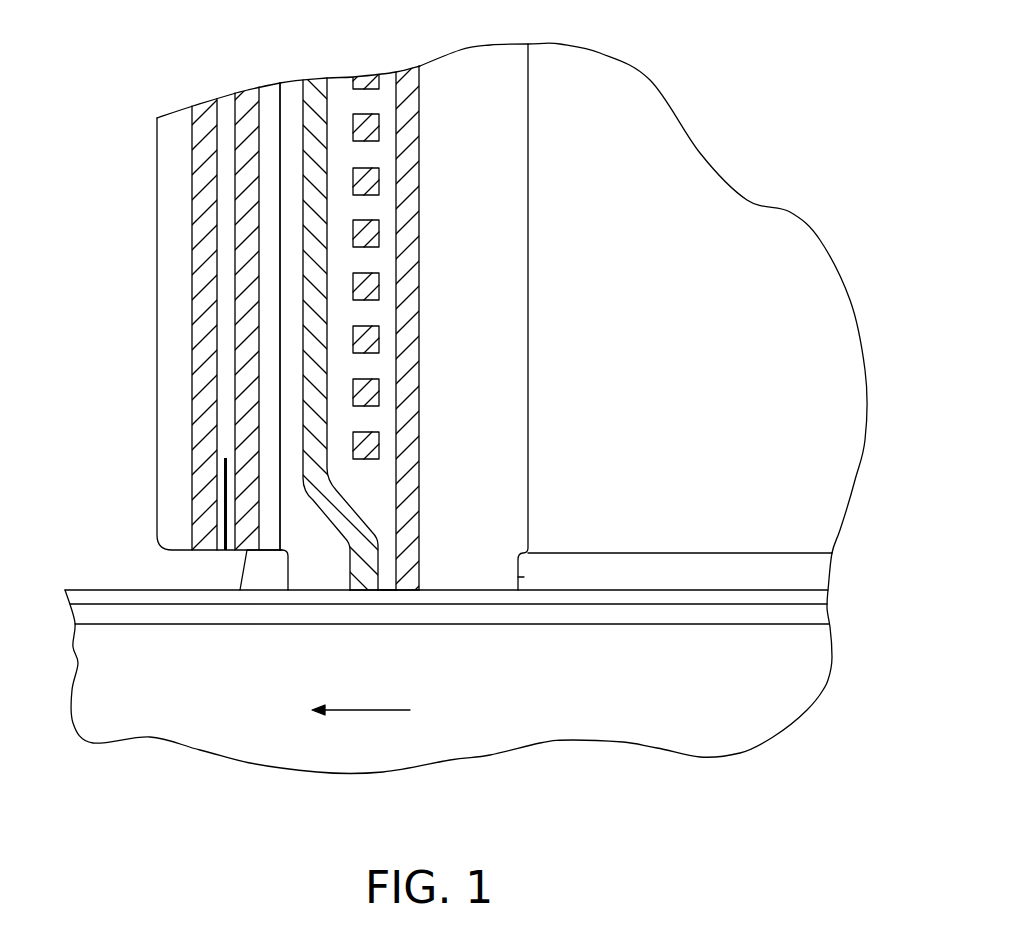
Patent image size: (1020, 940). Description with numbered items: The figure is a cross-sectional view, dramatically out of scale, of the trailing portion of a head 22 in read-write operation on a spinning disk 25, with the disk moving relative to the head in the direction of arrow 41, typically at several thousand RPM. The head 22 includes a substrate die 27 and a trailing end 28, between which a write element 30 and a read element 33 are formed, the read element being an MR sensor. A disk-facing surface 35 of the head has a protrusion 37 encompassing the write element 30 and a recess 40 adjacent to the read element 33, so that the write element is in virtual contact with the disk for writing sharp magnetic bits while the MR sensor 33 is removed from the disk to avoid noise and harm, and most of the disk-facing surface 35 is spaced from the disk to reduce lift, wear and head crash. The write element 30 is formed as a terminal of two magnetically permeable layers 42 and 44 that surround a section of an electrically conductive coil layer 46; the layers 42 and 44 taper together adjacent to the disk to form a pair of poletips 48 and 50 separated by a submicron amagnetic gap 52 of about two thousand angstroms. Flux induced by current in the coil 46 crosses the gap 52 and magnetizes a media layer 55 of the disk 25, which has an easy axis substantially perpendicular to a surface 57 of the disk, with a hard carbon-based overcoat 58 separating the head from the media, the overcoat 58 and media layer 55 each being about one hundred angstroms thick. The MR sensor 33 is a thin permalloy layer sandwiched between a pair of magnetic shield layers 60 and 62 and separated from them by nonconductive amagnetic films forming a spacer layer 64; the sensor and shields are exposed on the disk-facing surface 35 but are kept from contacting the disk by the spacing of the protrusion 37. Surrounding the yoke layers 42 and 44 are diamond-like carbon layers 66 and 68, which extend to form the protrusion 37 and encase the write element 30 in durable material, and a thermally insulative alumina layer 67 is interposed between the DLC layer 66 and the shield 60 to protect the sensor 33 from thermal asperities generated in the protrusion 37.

The head 22 is at (836, 186).
The spinning disk 25 is at (836, 742).
The substrate die 27 is at (695, 419).
The trailing end 28 is at (146, 348).
The write element 30 is at (440, 545).
The read element 33 is at (224, 497).
The disk-facing surface 35 is at (712, 566).
The protrusion 37 is at (518, 577).
The recess 40 is at (242, 591).
The arrow 41 is at (368, 712).
The magnetically permeable layer 42 is at (315, 75).
The magnetically permeable layer 44 is at (420, 125).
The electrically conductive coil layer 46 is at (380, 187).
The poletip 48 is at (365, 591).
The poletip 50 is at (412, 591).
The amagnetic gap 52 is at (387, 591).
The media layer 55 is at (655, 625).
The surface of the disk 57 is at (100, 578).
The overcoat 58 is at (167, 605).
The magnetic shield layer 60 is at (237, 148).
The magnetic shield layer 62 is at (157, 254).
The spacer layer 64 is at (215, 379).
The diamond-like carbon layer 66 is at (293, 75).
The thermally insulative alumina layer 67 is at (273, 80).
The diamond-like carbon layer 68 is at (528, 325).